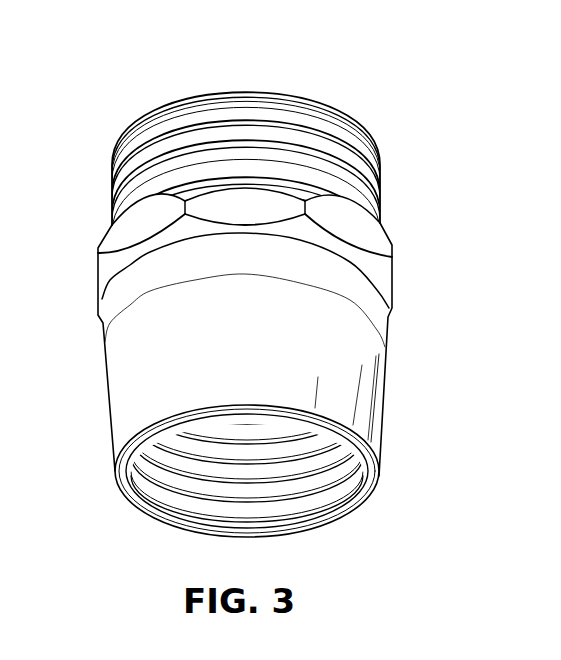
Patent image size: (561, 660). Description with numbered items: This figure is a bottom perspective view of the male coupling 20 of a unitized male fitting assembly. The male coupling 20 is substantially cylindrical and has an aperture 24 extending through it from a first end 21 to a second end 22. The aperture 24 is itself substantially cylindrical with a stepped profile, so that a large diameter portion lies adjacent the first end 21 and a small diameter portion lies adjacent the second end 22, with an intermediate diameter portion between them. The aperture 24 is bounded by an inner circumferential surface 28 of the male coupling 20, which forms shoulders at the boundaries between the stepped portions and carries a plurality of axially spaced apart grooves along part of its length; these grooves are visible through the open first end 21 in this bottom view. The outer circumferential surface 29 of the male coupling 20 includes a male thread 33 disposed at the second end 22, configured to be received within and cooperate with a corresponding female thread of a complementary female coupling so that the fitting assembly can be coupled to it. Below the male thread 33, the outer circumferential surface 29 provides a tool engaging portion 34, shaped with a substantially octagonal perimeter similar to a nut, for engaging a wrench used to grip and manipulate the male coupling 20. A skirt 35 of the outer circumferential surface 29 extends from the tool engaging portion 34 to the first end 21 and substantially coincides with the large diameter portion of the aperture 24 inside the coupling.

The male coupling 20 is at (116, 117).
The first end 21 is at (372, 488).
The second end 22 is at (305, 101).
The aperture 24 is at (172, 491).
The inner circumferential surface 28 is at (342, 476).
The outer circumferential surface 29 is at (380, 383).
The male thread 33 is at (110, 168).
The tool engaging portion 34 is at (108, 253).
The skirt 35 is at (370, 423).